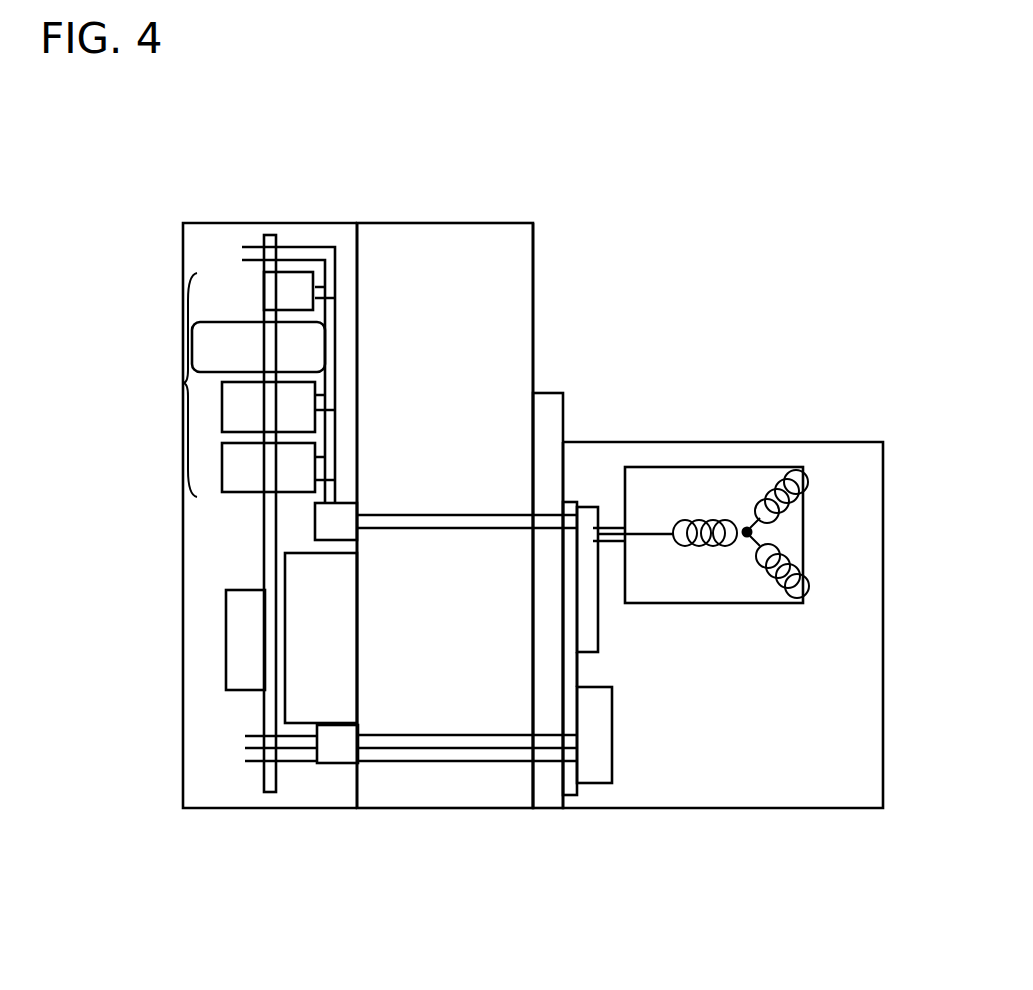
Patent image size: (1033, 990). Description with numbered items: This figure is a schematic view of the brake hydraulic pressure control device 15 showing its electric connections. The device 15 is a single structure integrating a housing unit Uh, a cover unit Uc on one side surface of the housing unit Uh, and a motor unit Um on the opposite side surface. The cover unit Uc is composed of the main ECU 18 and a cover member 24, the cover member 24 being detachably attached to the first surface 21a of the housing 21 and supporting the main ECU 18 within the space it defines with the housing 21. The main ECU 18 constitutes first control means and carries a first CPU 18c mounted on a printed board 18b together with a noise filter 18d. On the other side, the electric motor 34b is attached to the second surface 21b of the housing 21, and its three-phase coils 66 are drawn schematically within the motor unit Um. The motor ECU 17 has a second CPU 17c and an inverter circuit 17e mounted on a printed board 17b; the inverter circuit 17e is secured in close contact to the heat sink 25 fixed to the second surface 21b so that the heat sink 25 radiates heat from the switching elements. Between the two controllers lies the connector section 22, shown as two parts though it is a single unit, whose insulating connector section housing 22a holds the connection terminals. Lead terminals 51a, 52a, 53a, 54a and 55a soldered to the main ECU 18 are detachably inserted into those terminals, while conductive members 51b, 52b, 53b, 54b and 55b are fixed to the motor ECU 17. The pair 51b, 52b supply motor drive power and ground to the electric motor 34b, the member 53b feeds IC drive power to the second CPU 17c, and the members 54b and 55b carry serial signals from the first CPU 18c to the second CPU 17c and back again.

The brake hydraulic pressure control device 15 is at (662, 210).
The motor ECU 17 is at (617, 665).
The printed board 17b is at (577, 667).
The second CPU 17c is at (590, 777).
The inverter circuit 17e is at (598, 622).
The main ECU 18 is at (262, 527).
The printed board 18b is at (283, 559).
The first CPU 18c is at (225, 641).
The noise filter 18d is at (234, 385).
The housing 21 is at (449, 476).
The first surface 21a is at (357, 263).
The second surface 21b is at (533, 235).
The connector section 22 is at (391, 705).
The connector section housing 22a is at (340, 507).
The cover member 24 is at (239, 465).
The heat sink 25 is at (552, 393).
The electric motor 34b is at (754, 560).
The lead terminal 51a is at (295, 247).
The conductive member 51b is at (450, 517).
The lead terminal 52a is at (313, 272).
The conductive member 52b is at (418, 530).
The lead terminal 53a is at (284, 762).
The conductive member 53b is at (410, 761).
The lead terminal 54a is at (296, 748).
The conductive member 54b is at (441, 748).
The lead terminal 55a is at (308, 736).
The conductive member 55b is at (478, 735).
The three-phase coils 66 is at (792, 500).
The cover unit Uc is at (198, 212).
The housing unit Uh is at (448, 213).
The motor unit Um is at (945, 337).